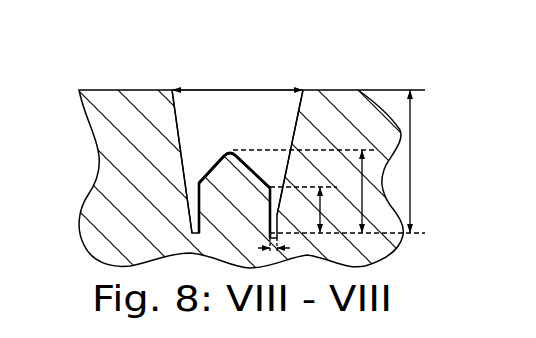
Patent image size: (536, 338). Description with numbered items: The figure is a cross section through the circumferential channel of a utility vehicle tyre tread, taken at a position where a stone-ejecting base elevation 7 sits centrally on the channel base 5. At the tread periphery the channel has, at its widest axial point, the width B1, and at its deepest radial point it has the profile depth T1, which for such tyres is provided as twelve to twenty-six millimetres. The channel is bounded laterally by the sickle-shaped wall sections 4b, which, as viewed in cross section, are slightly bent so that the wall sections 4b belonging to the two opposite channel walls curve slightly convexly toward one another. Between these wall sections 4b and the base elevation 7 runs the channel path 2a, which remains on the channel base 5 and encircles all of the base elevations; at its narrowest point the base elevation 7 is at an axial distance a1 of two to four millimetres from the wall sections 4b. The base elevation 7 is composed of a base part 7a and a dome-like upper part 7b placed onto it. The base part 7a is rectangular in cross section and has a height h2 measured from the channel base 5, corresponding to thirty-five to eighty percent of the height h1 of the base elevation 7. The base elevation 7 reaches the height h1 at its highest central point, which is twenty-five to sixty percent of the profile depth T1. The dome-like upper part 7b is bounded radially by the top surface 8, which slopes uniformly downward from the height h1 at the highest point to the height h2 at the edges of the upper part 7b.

The channel base 5 is at (100, 252).
The base elevation 7 is at (258, 169).
The base part 7a is at (188, 204).
The dome-like upper part 7b is at (207, 169).
The top surface 8 is at (180, 156).
The wall section 4b is at (290, 173).
The channel path 2a is at (271, 188).
The width of the circumferential channel B1 is at (227, 90).
The profile depth T1 is at (354, 161).
The height of the base elevation h1 is at (309, 191).
The height of the base part h2 is at (306, 210).
The distance a1 is at (285, 247).